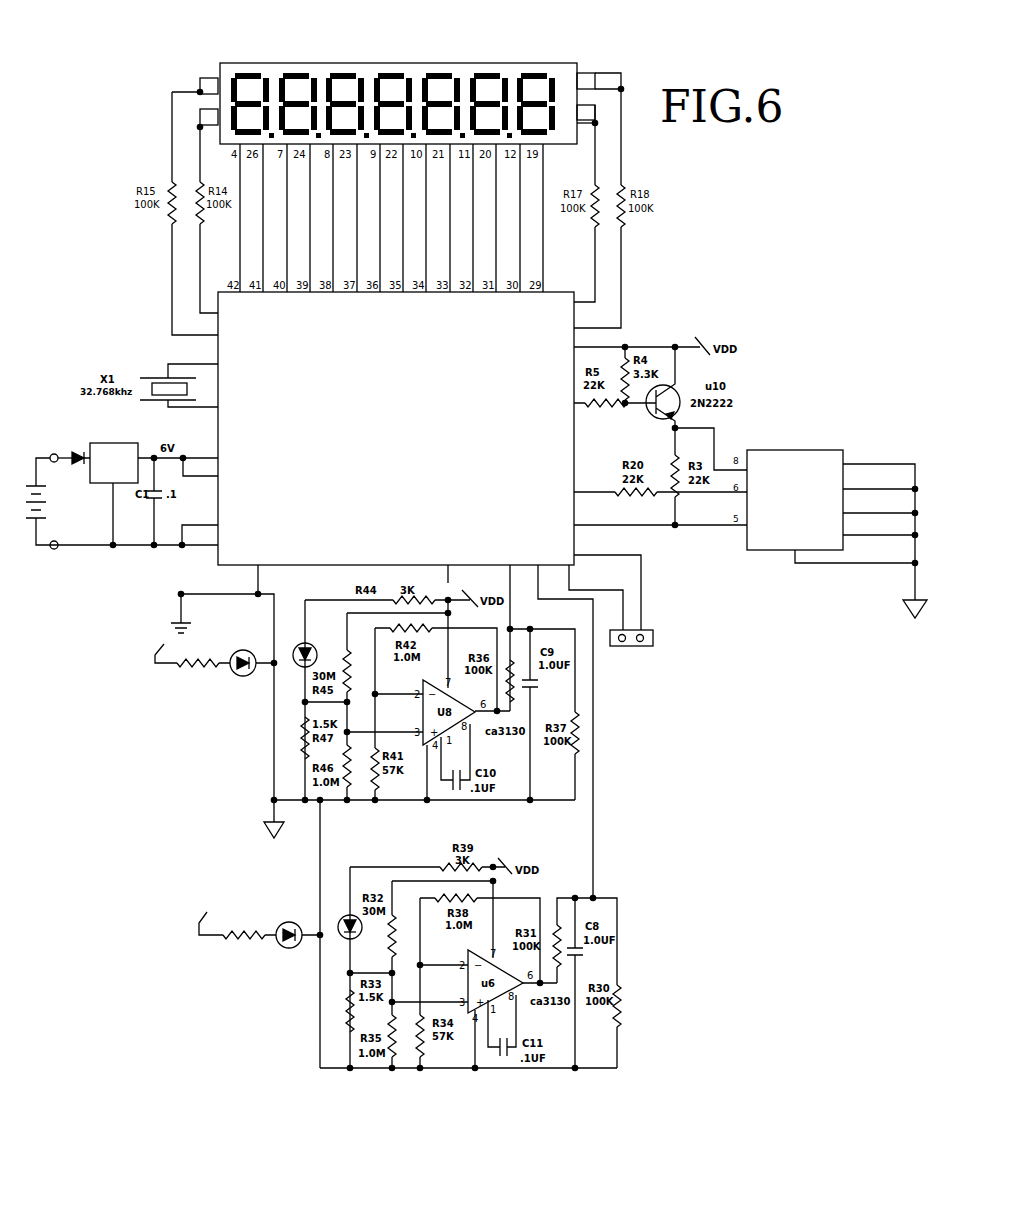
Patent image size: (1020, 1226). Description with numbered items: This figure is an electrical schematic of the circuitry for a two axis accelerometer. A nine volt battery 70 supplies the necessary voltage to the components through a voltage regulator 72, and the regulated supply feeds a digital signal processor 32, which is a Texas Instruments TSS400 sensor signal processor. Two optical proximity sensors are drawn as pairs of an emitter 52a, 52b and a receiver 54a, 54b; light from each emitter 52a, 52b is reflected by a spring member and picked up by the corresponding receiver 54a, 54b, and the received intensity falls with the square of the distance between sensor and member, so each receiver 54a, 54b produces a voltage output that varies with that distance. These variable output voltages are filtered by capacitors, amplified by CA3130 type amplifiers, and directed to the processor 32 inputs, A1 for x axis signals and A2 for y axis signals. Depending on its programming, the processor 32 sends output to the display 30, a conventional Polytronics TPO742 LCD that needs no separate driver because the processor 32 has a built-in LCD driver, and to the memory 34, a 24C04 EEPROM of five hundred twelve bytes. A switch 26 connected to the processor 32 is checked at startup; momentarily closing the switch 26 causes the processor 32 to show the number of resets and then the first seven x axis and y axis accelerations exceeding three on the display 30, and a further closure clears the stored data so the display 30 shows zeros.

The display 30 is at (562, 63).
The digital signal processor 32 is at (416, 480).
The memory 34 is at (822, 450).
The switch 26 is at (653, 646).
The emitter 52a is at (239, 676).
The emitter 52b is at (289, 921).
The receiver 54a is at (303, 643).
The receiver 54b is at (348, 914).
The battery 70 is at (46, 512).
The voltage regulator 72 is at (139, 443).